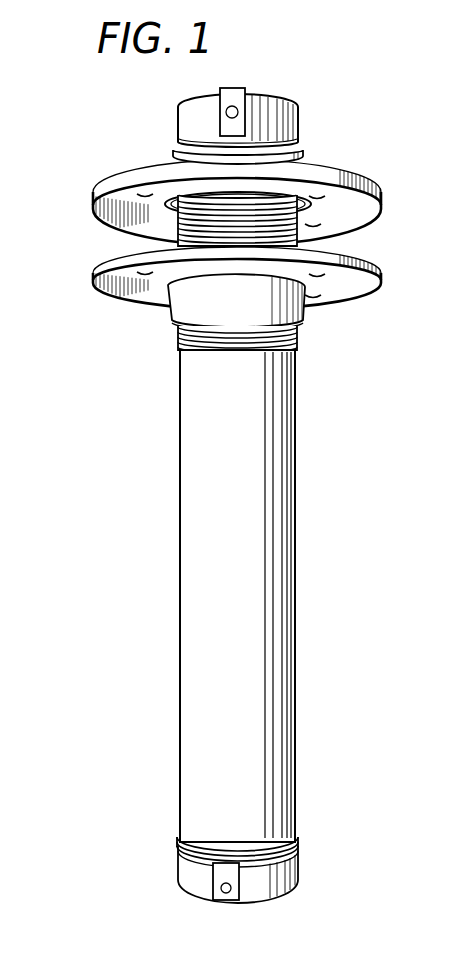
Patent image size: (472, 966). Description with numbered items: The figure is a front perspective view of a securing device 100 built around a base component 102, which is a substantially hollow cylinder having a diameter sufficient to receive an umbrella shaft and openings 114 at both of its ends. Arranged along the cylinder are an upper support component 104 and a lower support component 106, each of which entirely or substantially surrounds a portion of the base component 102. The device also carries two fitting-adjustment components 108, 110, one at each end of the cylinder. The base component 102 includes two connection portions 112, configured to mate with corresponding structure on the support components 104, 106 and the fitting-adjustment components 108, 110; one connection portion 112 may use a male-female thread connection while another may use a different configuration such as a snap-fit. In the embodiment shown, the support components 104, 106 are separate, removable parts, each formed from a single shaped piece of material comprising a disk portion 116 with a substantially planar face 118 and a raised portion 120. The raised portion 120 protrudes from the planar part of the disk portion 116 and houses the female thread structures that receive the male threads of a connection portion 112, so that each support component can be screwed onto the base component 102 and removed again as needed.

The securing device 100 is at (368, 378).
The base component 102 is at (190, 521).
The upper support component 104 is at (82, 186).
The lower support component 106 is at (84, 275).
The fitting-adjustment component 108 is at (192, 121).
The fitting-adjustment component 110 is at (197, 876).
The connection portion 112 is at (177, 225).
The opening 114 is at (284, 94).
The disk portion 116 is at (385, 197).
The planar face 118 is at (357, 208).
The raised portion 120 is at (300, 158).